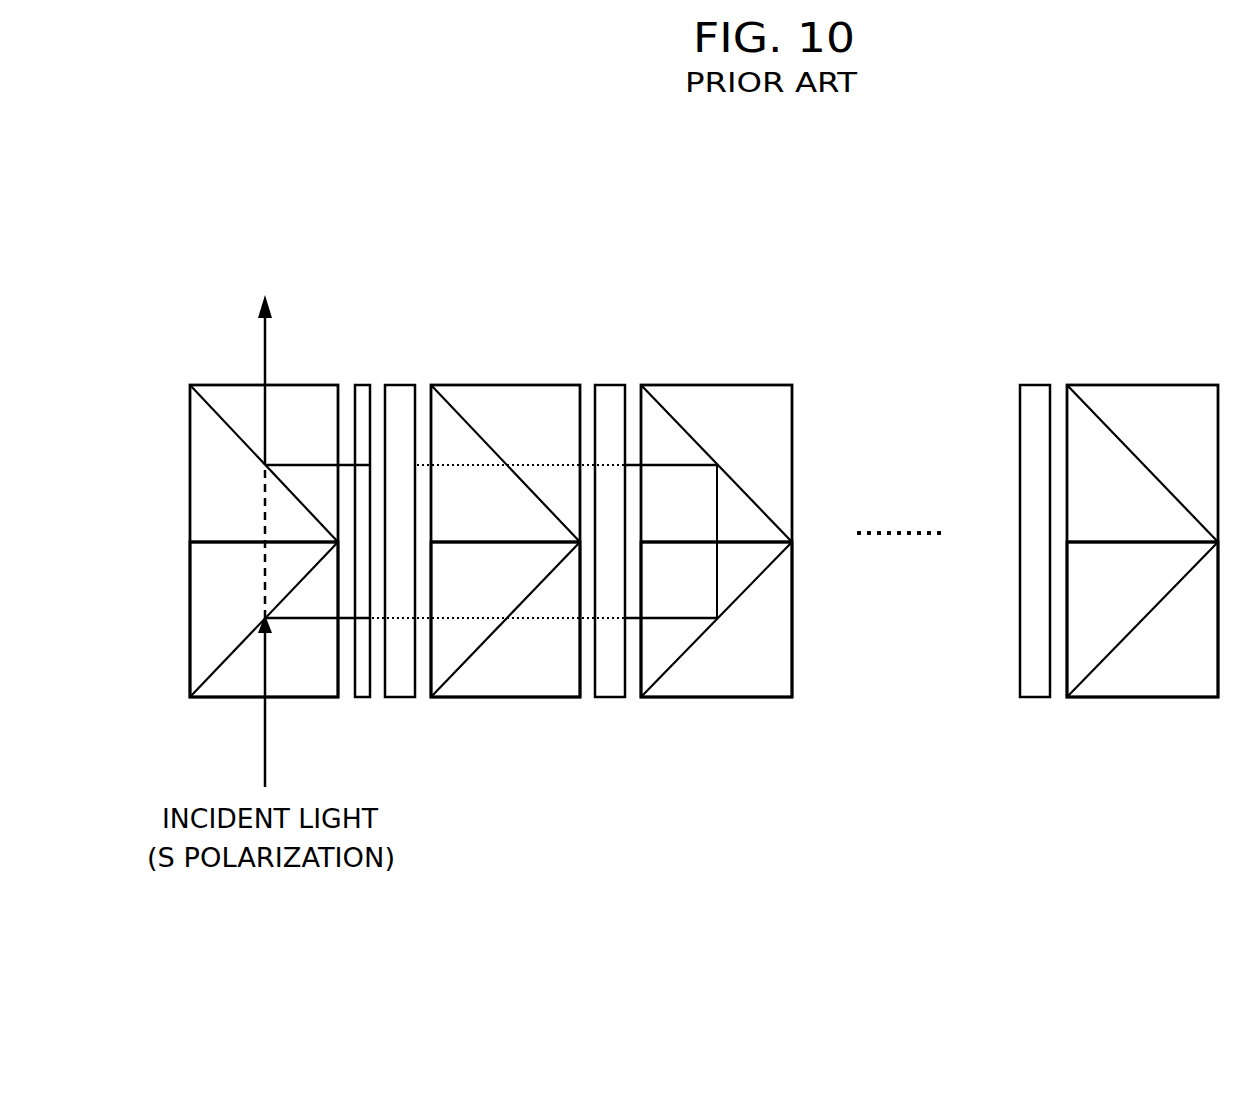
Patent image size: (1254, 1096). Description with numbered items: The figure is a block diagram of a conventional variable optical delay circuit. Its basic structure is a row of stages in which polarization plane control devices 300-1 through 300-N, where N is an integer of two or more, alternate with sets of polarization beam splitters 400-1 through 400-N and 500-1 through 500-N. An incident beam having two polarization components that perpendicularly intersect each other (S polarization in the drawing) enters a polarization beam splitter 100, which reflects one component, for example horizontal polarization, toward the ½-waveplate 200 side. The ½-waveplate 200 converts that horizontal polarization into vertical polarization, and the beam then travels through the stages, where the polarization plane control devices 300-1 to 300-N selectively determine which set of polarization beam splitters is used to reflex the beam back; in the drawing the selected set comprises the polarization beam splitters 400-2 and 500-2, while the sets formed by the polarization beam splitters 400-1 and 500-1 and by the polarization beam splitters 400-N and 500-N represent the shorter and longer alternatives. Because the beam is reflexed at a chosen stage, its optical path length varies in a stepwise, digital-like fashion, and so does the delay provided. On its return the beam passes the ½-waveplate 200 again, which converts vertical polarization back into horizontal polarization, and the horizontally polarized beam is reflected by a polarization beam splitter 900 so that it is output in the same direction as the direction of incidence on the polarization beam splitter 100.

The polarization beam splitter 900 is at (189, 460).
The polarization beam splitter 100 is at (189, 608).
The ½-waveplate 200 is at (363, 385).
The polarization plane control device 300-1 is at (401, 385).
The polarization plane control device 300-N is at (1037, 385).
The polarization beam splitter 500-1 is at (507, 385).
The polarization beam splitter 500-2 is at (718, 385).
The polarization beam splitter 500-N is at (1143, 385).
The polarization beam splitter 400-1 is at (505, 697).
The polarization beam splitter 400-2 is at (716, 697).
The polarization beam splitter 400-N is at (1140, 697).